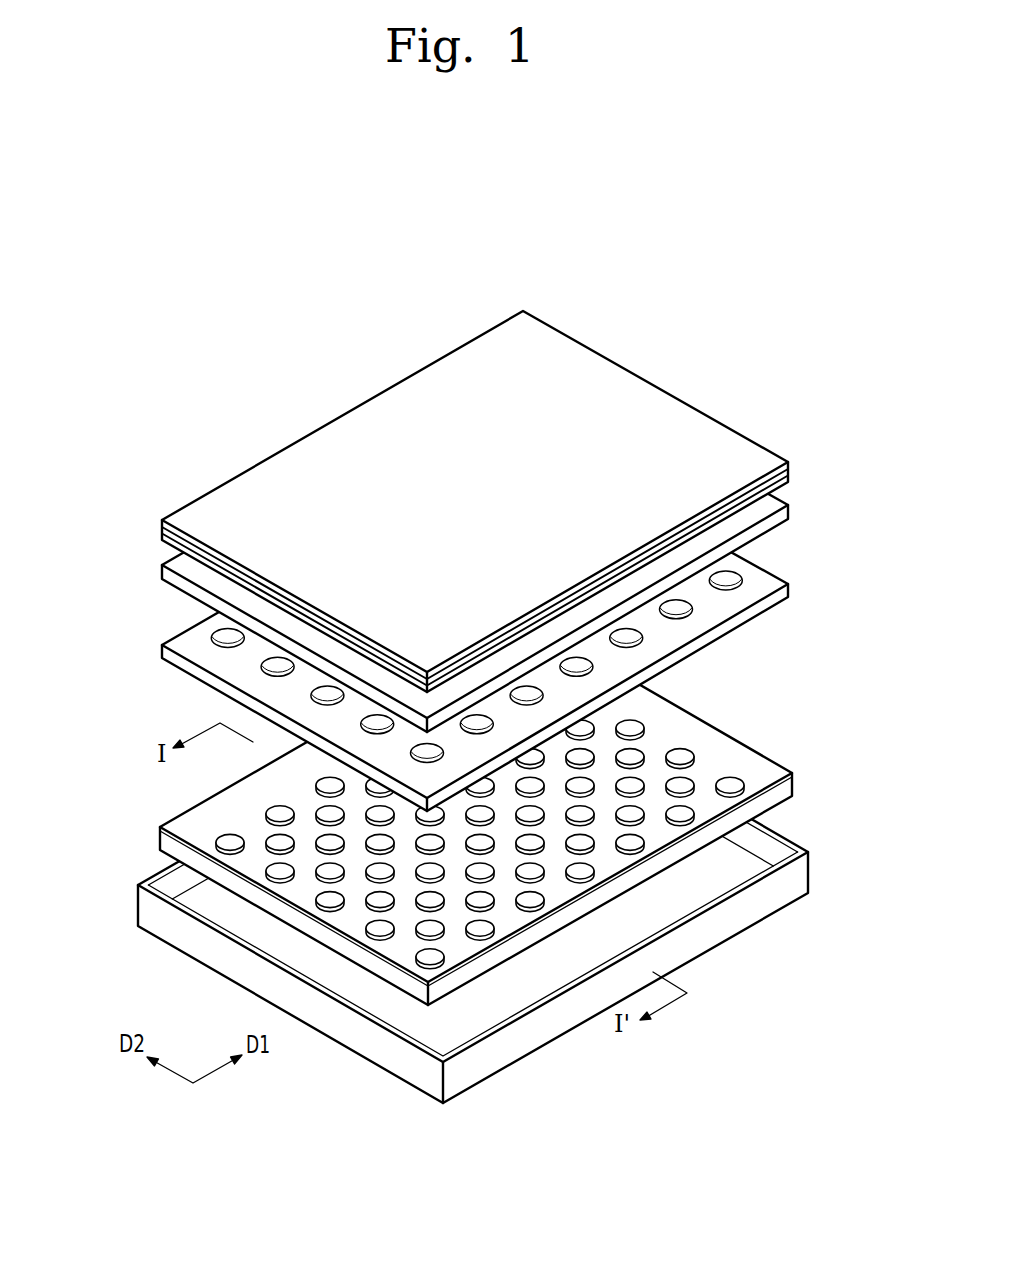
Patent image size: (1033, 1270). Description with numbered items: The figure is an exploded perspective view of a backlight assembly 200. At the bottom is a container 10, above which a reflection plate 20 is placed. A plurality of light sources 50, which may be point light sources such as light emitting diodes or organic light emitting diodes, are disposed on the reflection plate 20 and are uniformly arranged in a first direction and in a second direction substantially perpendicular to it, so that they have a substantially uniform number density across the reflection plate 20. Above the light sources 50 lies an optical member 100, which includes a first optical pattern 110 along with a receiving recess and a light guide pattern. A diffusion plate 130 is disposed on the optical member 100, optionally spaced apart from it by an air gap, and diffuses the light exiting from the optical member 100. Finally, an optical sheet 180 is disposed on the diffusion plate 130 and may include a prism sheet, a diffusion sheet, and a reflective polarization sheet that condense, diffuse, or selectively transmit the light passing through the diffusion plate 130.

The container 10 is at (152, 871).
The reflection plate 20 is at (172, 813).
The light sources 50 is at (231, 835).
The optical member 100 is at (170, 639).
The first optical pattern 110 is at (228, 640).
The diffusion plate 130 is at (170, 559).
The optical sheet 180 is at (170, 514).
The backlight assembly 200 is at (684, 284).